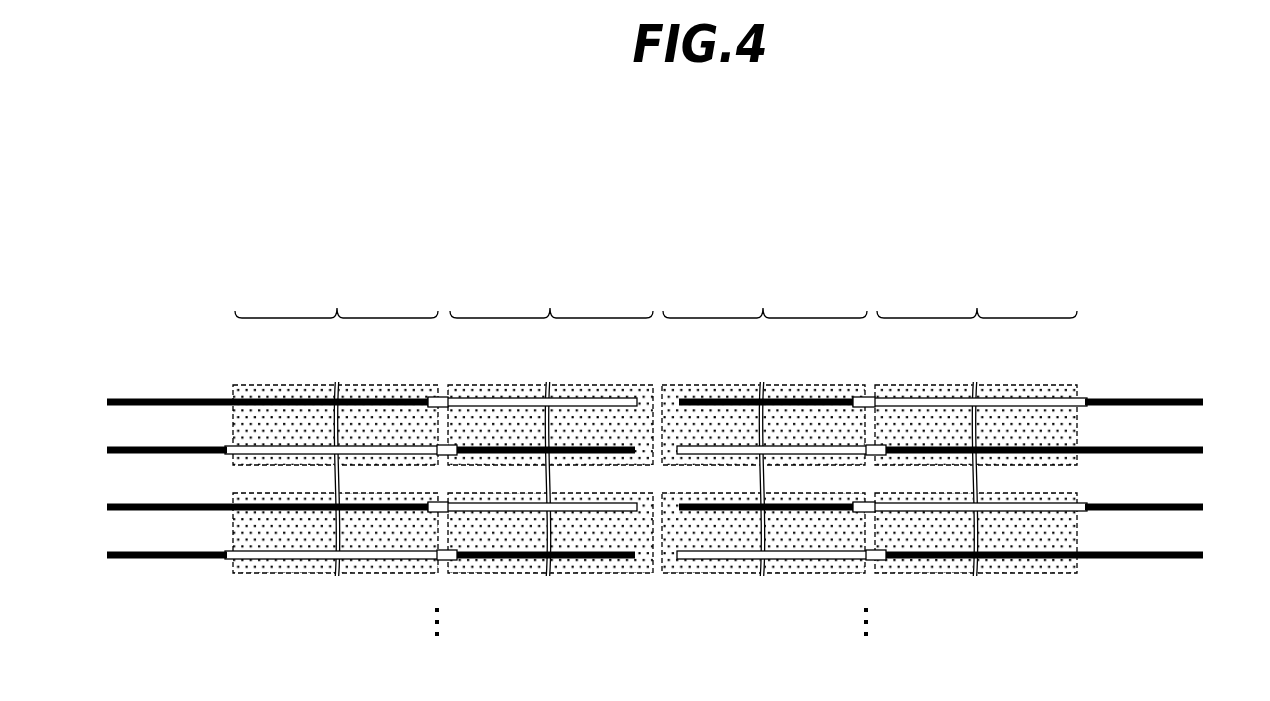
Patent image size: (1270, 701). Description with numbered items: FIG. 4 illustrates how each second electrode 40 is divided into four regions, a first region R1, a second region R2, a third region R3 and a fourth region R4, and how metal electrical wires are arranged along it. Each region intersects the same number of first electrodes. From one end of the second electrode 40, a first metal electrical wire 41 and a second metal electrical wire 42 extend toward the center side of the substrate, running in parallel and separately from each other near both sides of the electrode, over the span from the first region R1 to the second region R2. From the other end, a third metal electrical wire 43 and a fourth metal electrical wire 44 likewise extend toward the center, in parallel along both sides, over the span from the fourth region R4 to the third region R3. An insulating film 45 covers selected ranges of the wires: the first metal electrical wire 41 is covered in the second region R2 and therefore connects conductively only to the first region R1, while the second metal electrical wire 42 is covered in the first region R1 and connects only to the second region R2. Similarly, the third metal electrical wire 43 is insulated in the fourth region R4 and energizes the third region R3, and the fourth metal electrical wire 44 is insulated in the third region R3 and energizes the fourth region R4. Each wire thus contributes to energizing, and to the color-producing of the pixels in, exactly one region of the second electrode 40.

The second electrode 40 is at (365, 390).
The first metal electrical wire 41 is at (123, 400).
The second metal electrical wire 42 is at (123, 449).
The third metal electrical wire 43 is at (1185, 397).
The fourth metal electrical wire 44 is at (1185, 447).
The insulating film 45 is at (441, 398).
The first region R1 is at (336, 298).
The second region R2 is at (551, 298).
The third region R3 is at (765, 298).
The fourth region R4 is at (977, 298).